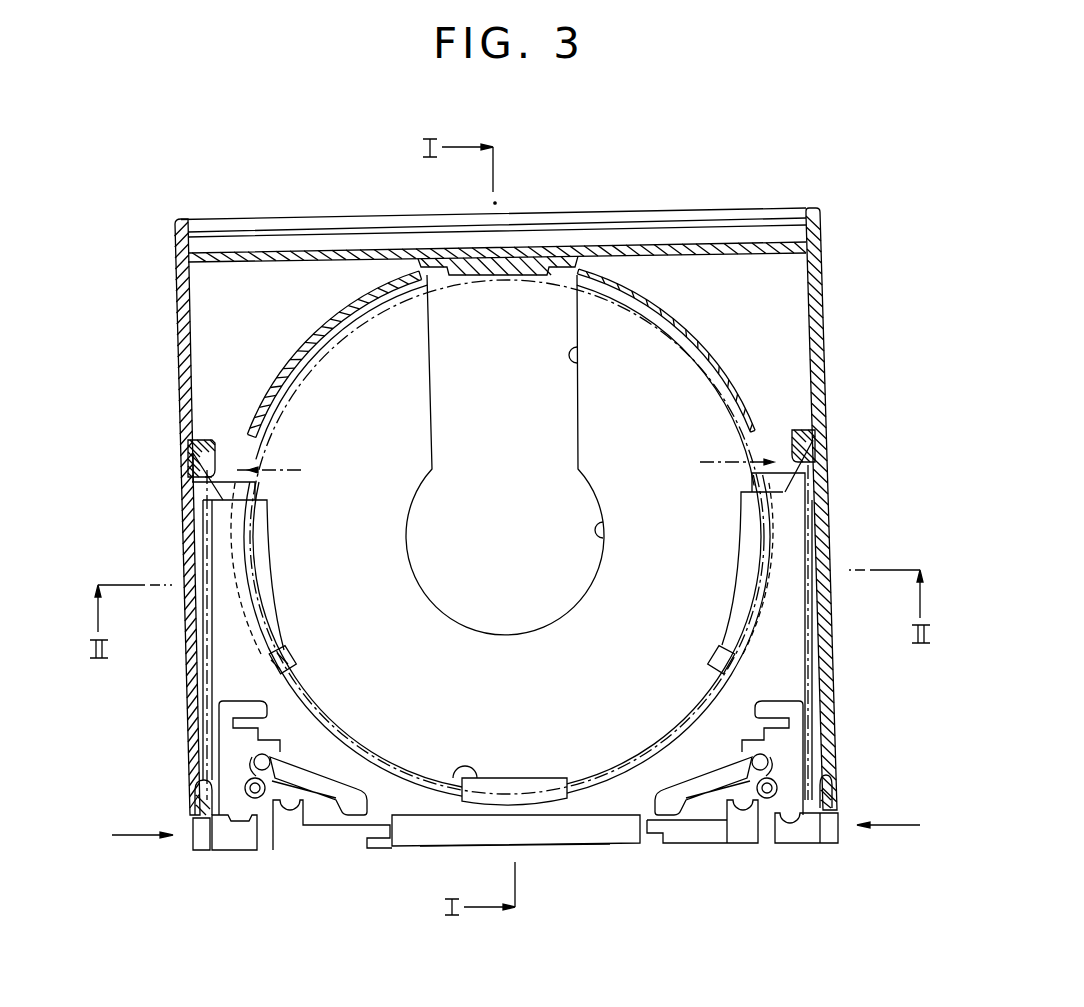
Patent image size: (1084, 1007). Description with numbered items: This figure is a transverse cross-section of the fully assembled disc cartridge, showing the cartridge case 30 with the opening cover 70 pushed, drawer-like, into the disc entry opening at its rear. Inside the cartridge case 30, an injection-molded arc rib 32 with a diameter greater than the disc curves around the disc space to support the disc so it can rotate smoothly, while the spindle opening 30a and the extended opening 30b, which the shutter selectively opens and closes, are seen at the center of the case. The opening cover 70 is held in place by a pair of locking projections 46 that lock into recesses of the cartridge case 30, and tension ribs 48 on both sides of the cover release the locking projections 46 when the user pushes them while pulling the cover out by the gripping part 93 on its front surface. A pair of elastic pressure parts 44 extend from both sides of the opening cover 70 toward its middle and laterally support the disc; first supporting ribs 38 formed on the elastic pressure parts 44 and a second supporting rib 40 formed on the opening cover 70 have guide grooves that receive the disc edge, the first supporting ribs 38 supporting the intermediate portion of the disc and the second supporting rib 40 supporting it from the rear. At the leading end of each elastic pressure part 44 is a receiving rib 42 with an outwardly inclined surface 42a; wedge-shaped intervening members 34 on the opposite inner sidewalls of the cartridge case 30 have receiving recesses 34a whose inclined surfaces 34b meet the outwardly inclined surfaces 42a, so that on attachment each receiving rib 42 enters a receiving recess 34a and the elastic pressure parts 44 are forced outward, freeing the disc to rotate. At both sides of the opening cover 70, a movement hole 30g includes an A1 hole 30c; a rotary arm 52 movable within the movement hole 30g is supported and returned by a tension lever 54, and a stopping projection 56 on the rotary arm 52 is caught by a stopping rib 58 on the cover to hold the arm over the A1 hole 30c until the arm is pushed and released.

The cartridge case 30 is at (793, 213).
The spindle opening 30a is at (605, 538).
The extended opening 30b is at (578, 357).
The A1 hole 30c is at (252, 757).
The movement hole 30g is at (245, 770).
The arc rib 32 is at (333, 312).
The intervening member 34 is at (185, 438).
The receiving recess 34a is at (188, 475).
The inclined surface 34b is at (202, 477).
The first supporting rib 38 is at (763, 605).
The second supporting rib 40 is at (460, 784).
The receiving rib 42 is at (815, 458).
The outwardly inclined surface 42a is at (815, 418).
The elastic pressure part 44 is at (217, 543).
The locking projection 46 is at (214, 815).
The tension rib 48 is at (193, 842).
The rotary arm 52 is at (272, 807).
The tension lever 54 is at (710, 815).
The stopping projection 56 is at (303, 800).
The stopping rib 58 is at (217, 715).
The opening cover 70 is at (593, 803).
The gripping part 93 is at (538, 837).